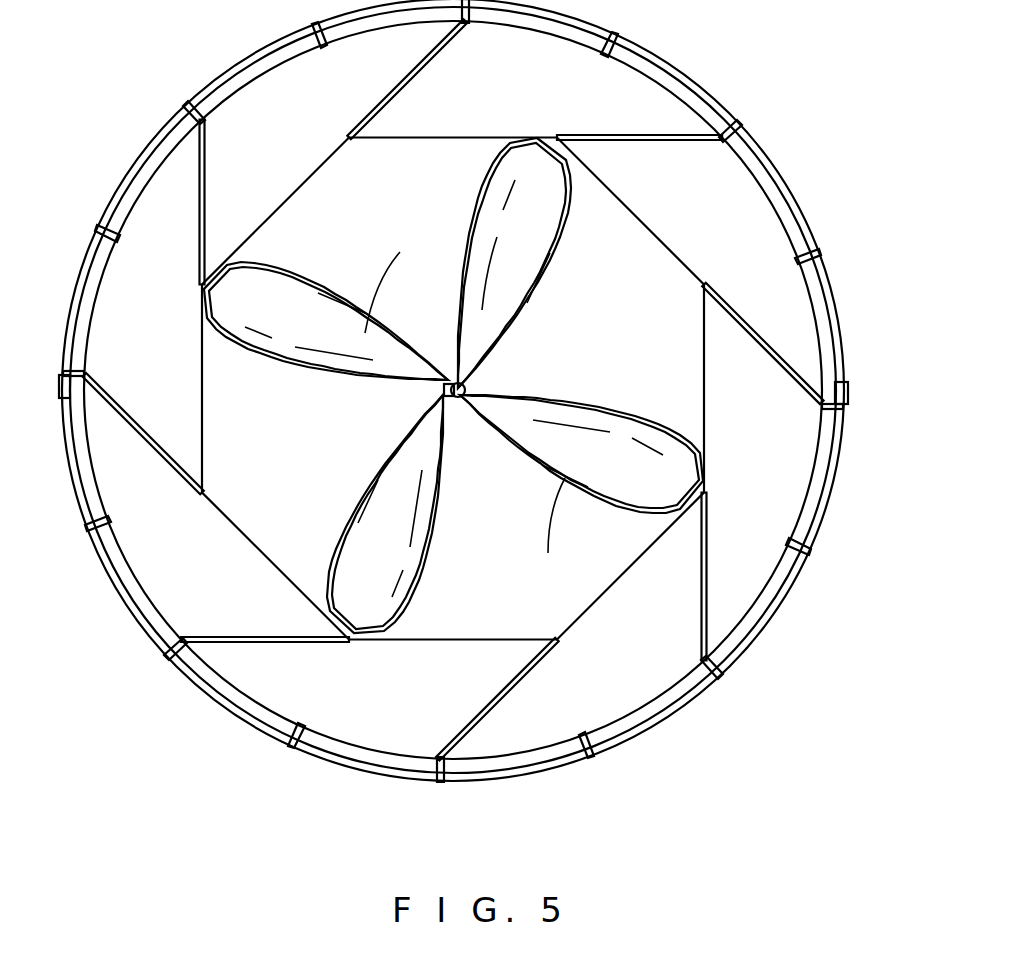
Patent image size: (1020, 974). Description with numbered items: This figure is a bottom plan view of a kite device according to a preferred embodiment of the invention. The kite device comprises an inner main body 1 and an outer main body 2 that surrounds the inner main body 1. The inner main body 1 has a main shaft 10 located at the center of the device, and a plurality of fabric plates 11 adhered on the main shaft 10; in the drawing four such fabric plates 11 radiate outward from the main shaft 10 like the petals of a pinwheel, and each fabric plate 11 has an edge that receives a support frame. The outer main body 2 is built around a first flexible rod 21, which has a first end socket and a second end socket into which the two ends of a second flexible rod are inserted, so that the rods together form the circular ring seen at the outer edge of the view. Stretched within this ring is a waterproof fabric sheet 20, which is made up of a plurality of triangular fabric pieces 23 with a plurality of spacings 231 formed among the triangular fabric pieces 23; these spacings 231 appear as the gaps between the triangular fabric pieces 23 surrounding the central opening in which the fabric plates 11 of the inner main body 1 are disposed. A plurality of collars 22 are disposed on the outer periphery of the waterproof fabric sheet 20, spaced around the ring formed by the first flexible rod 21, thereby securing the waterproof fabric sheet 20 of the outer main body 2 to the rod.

The inner main body 1 is at (453, 385).
The outer main body 2 is at (488, 424).
The main shaft 10 is at (470, 383).
The fabric plates 11 is at (497, 237).
The waterproof fabric sheet 20 is at (488, 391).
The first flexible rod 21 is at (850, 325).
The collars 22 is at (810, 257).
The triangular fabric pieces 23 is at (453, 433).
The spacings 231 is at (495, 703).